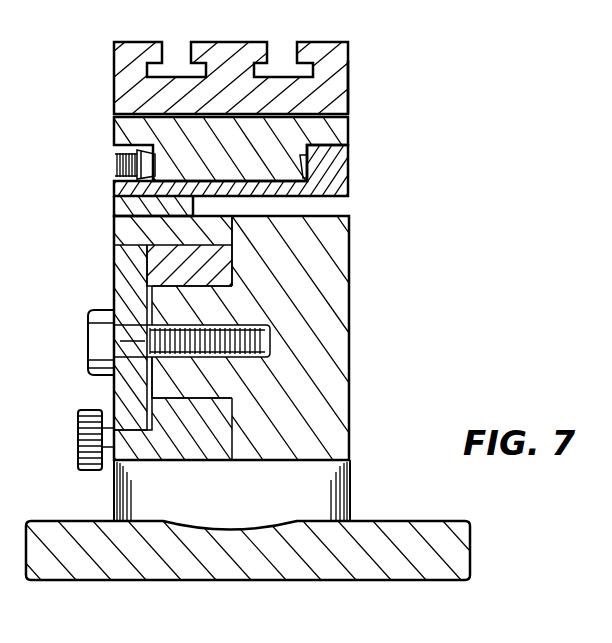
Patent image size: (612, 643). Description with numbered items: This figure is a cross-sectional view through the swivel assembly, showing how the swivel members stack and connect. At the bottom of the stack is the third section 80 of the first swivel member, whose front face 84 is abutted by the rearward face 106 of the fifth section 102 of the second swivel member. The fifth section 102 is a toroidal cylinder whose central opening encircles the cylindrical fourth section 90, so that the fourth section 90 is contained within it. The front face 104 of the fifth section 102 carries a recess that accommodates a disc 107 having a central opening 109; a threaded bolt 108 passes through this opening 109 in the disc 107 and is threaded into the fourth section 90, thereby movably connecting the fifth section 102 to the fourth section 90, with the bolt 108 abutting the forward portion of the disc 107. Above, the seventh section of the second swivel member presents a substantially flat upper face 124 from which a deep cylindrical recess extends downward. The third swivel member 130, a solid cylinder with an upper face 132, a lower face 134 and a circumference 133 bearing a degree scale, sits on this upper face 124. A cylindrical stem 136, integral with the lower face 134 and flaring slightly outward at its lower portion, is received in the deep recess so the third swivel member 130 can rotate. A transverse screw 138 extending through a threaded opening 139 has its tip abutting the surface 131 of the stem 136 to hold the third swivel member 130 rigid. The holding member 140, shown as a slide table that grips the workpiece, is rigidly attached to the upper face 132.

The third section 80 is at (325, 304).
The front face 84 is at (235, 282).
The fourth section 90 is at (200, 383).
The fifth section 102 is at (152, 450).
The front face 104 is at (113, 230).
The rearward face 106 is at (235, 250).
The disc 107 is at (127, 271).
The threaded bolt 108 is at (100, 337).
The central opening 109 is at (140, 368).
The upper face 124 is at (113, 117).
The third swivel member 130 is at (293, 138).
The surface 131 is at (320, 172).
The upper face 132 is at (348, 83).
The circumference 133 is at (348, 119).
The lower face 134 is at (307, 162).
The cylindrical stem 136 is at (137, 153).
The transverse screw 138 is at (114, 167).
The threaded opening 139 is at (113, 198).
The holding member 140 is at (348, 47).